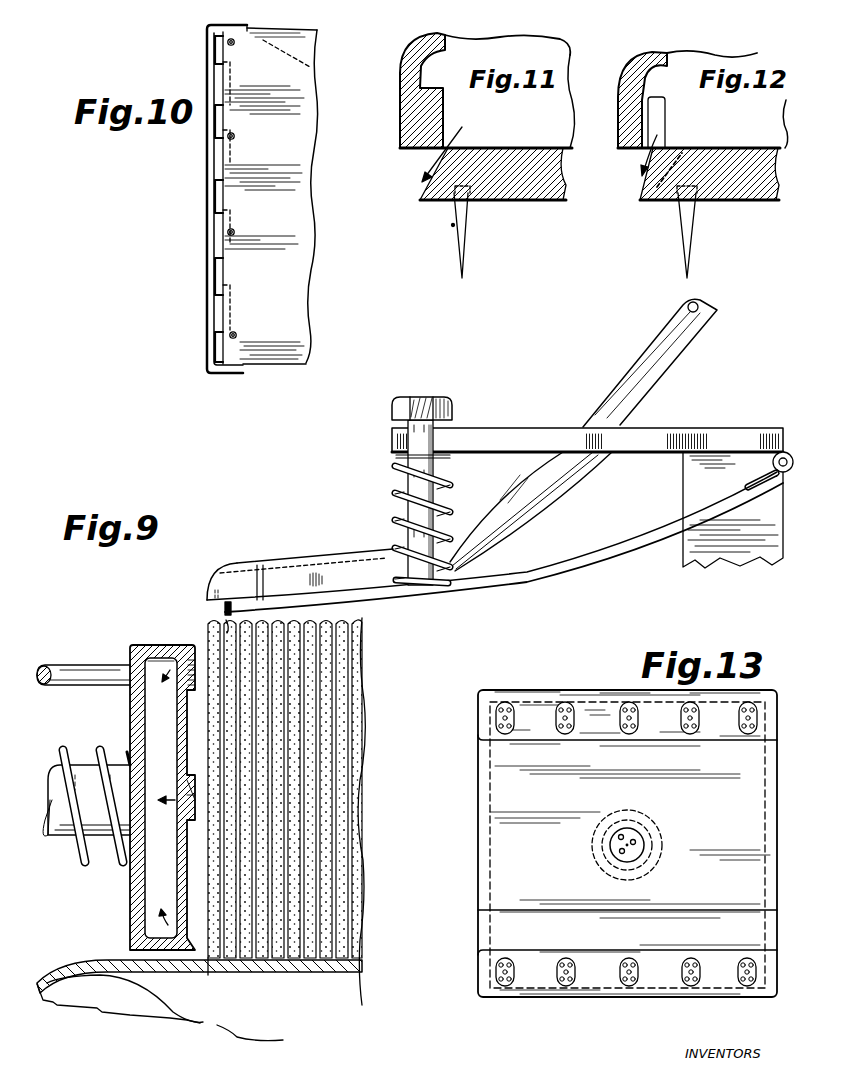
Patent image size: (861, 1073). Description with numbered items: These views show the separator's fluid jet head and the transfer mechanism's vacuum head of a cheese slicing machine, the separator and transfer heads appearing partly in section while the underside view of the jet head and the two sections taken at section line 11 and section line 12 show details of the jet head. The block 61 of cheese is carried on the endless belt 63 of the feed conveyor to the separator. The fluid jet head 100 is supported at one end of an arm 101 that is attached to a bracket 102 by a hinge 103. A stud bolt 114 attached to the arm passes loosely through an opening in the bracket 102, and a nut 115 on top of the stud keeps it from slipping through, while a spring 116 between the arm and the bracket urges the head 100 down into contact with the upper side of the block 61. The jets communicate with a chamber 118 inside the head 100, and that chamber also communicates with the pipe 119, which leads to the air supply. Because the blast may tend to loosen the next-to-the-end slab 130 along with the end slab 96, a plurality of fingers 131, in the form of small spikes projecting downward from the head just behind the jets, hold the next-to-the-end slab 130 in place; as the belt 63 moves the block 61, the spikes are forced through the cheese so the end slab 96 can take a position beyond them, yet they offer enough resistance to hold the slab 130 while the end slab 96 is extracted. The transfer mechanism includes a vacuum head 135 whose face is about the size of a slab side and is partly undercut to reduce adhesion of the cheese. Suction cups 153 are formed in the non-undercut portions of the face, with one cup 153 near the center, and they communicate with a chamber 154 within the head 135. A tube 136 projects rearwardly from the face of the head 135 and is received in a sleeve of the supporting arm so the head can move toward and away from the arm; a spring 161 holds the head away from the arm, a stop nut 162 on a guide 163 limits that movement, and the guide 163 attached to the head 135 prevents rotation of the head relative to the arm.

In FIG. 10, the fluid jet head 100 is at (206, 203).
In FIG. 9, the fluid jet head 100 is at (705, 425).
In FIG. 10, the arm 101 is at (273, 183).
In FIG. 11, the arm 101 is at (527, 183).
In FIG. 12, the arm 101 is at (747, 180).
In FIG. 9, the arm 101 is at (543, 567).
In FIG. 10, the fingers 131 is at (234, 44).
In FIG. 11, the fingers 131 is at (466, 237).
In FIG. 12, the fingers 131 is at (690, 247).
In FIG. 9, the fingers 131 is at (224, 628).
In FIG. 11, the chamber 118 is at (523, 130).
In FIG. 12, the chamber 118 is at (747, 135).
In FIG. 9, the chamber 118 is at (243, 582).
In FIG. 10, the section line 11— 11 is at (205, 318).
In FIG. 10, the section line 12— 12 is at (187, 283).
In FIG. 9, the bracket 102 is at (482, 427).
In FIG. 9, the hinge 103 is at (762, 478).
In FIG. 9, the stud bolt 114 is at (433, 465).
In FIG. 9, the nut 115 is at (418, 400).
In FIG. 9, the spring 116 is at (392, 468).
In FIG. 9, the pipe 119 is at (645, 360).
In FIG. 9, the stop nut 162 is at (288, 557).
In FIG. 9, the guide 163 is at (78, 674).
In FIG. 9, the chamber 154 is at (152, 683).
In FIG. 9, the spring 161 is at (102, 747).
In FIG. 9, the tube 136 is at (60, 840).
In FIG. 9, the vacuum head 135 is at (130, 910).
In FIG. 13, the vacuum head 135 is at (515, 780).
In FIG. 9, the block 61 is at (323, 843).
In FIG. 9, the endless belt 63 is at (332, 958).
In FIG. 9, the next-to-the-end slab 130 is at (231, 947).
In FIG. 9, the end slab 96 is at (212, 946).
In FIG. 13, the suction cups 153 is at (510, 705).